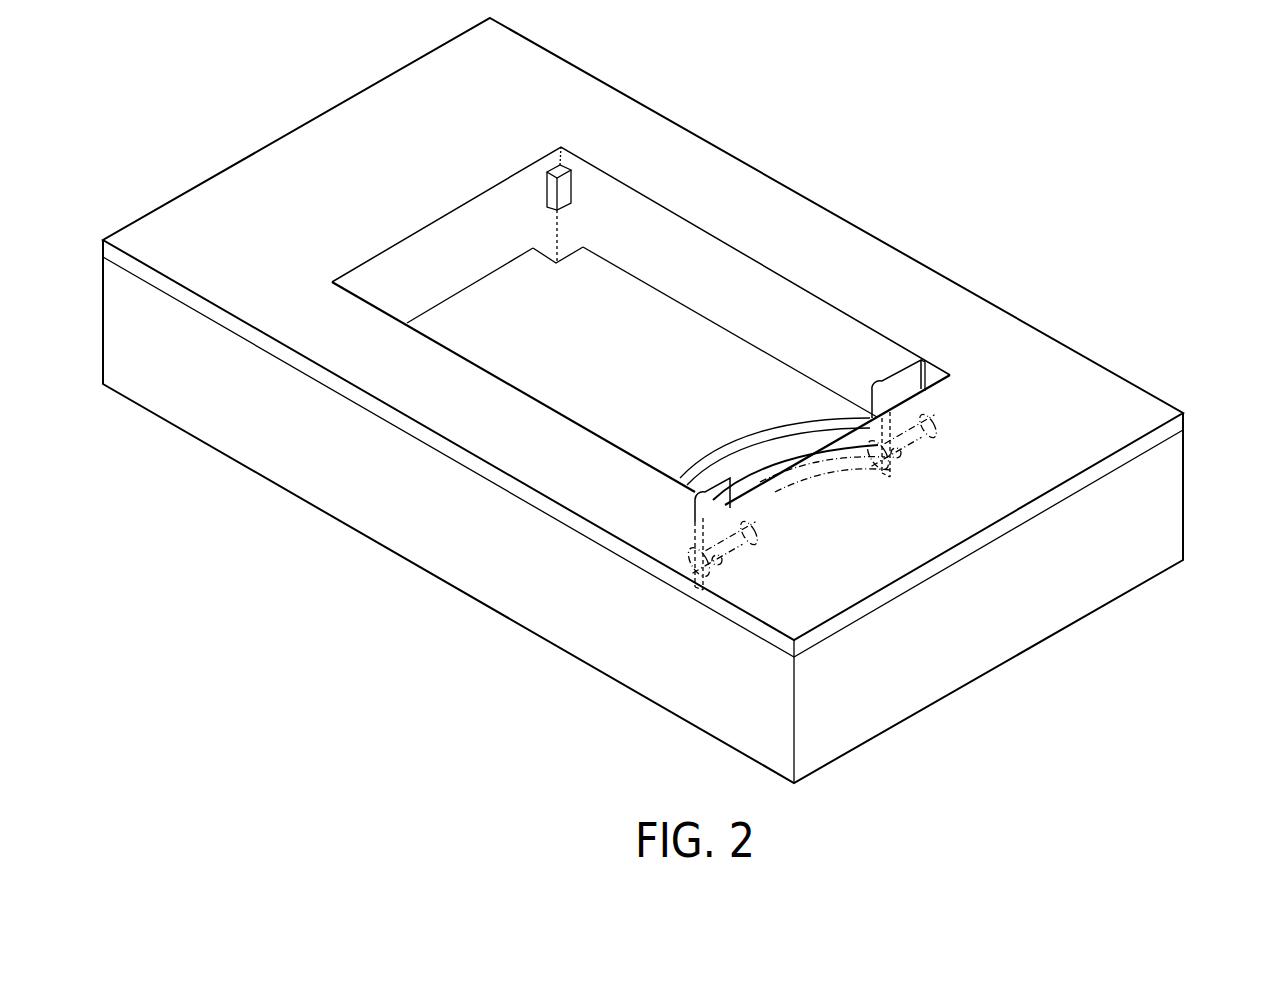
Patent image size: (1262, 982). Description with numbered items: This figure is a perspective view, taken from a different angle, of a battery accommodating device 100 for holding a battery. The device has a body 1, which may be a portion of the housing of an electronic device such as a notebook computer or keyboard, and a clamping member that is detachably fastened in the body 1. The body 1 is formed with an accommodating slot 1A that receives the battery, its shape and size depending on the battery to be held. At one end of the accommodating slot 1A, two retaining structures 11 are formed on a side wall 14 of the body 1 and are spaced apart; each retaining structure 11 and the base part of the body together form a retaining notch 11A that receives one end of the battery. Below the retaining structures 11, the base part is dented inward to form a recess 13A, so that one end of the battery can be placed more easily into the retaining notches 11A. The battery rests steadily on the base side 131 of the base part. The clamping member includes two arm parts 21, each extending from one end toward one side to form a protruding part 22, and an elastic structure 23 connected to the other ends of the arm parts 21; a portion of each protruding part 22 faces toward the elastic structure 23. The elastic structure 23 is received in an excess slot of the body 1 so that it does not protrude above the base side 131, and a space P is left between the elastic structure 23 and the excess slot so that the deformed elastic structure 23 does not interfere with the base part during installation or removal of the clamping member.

The battery accommodating device 100 is at (1152, 70).
The body 1 is at (1179, 494).
The accommodating slot 1A is at (800, 316).
The side wall 14 is at (403, 273).
The base side 131 is at (665, 335).
The recess 13A is at (567, 250).
The retaining structure 11 is at (562, 189).
The retaining notch 11A is at (546, 221).
The protruding part 22 is at (900, 370).
The arm part 21 is at (866, 455).
The elastic structure 23 is at (787, 457).
The space P is at (741, 453).